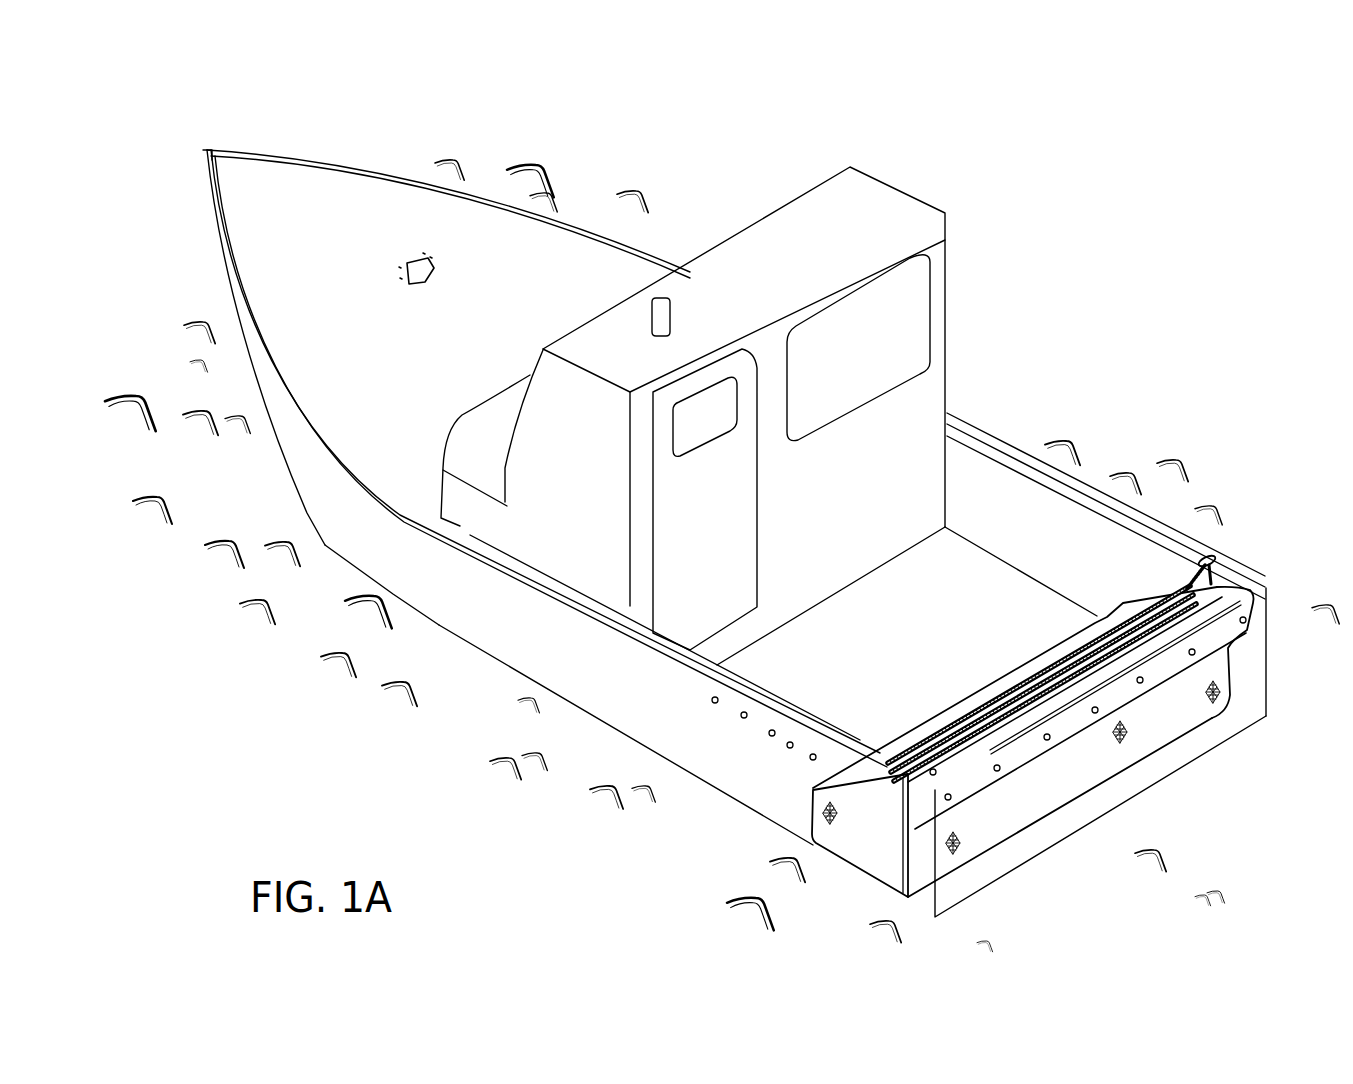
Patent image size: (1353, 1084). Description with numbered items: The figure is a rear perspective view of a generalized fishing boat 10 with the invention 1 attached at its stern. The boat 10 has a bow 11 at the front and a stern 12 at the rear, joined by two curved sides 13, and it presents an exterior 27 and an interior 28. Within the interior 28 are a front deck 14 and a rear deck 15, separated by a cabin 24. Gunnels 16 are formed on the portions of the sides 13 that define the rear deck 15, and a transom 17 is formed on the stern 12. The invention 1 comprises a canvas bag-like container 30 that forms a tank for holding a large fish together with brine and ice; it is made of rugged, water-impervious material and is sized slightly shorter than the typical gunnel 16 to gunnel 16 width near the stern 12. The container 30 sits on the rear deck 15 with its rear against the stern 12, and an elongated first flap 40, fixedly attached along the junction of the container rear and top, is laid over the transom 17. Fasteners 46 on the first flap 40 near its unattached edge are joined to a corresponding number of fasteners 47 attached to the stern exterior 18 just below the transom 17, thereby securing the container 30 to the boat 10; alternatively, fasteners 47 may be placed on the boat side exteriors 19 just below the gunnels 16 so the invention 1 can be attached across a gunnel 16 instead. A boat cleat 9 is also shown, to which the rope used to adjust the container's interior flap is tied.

The invention 1 is at (1297, 550).
The boat cleat 9 is at (1215, 557).
The fishing boat 10 is at (611, 112).
The bow 11 is at (206, 148).
The stern 12 is at (1268, 704).
The curved sides 13 is at (640, 241).
The front deck 14 is at (347, 249).
The rear deck 15 is at (926, 624).
The gunnels 16 is at (1082, 487).
The transom 17 is at (912, 794).
The stern exterior 18 is at (1040, 856).
The boat side exteriors 19 is at (690, 739).
The cabin 24 is at (946, 237).
The exterior 27 is at (336, 545).
The interior 28 is at (976, 463).
The canvas bag-like container 30 is at (1000, 680).
The first flap 40 is at (1157, 670).
The flap fasteners 46 is at (1049, 738).
The boat fasteners 47 is at (950, 798).